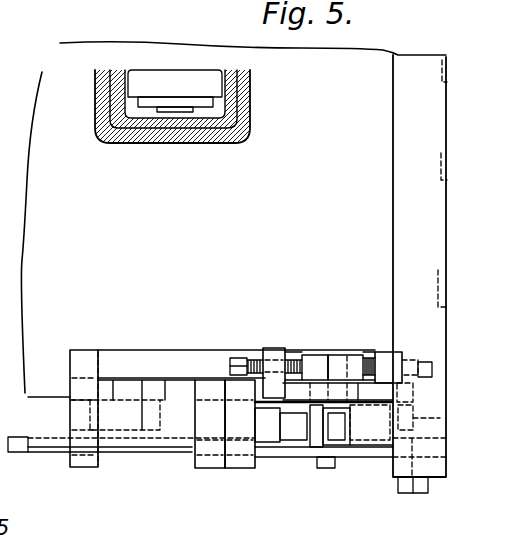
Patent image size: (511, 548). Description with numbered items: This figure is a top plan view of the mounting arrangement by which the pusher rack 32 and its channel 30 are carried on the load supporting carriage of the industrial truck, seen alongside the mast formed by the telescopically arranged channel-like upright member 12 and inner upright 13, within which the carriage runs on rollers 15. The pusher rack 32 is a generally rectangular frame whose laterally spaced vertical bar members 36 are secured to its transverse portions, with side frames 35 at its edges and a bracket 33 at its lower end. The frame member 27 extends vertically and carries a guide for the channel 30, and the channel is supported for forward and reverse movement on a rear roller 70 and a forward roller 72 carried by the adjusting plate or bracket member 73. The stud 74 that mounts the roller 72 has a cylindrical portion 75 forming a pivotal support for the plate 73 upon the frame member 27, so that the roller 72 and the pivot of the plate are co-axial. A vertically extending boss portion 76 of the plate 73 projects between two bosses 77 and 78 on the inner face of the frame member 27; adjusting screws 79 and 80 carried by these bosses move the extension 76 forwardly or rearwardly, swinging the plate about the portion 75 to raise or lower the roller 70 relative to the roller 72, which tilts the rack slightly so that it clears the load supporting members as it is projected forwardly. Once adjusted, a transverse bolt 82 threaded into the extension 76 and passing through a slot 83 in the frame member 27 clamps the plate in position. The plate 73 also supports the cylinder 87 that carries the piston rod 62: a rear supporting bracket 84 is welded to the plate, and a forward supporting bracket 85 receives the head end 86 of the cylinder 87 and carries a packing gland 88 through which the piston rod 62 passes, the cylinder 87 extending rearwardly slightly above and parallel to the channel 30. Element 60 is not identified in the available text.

The upright member 12 is at (136, 144).
The inner telescoping upright 13 is at (108, 122).
The rollers 15 is at (152, 78).
The frame member 27 is at (409, 393).
The channel 30 is at (17, 455).
The pusher rack 32 is at (449, 223).
The bracket 33 is at (374, 455).
The side frames 35 is at (430, 477).
The bar members 36 is at (449, 173).
The block 60 is at (313, 442).
The piston rod 62 is at (293, 430).
The roller 70 is at (155, 443).
The roller 72 is at (415, 418).
The adjusting plate or bracket member 73 is at (181, 354).
The stud 74 is at (368, 440).
The cylindrical portion 75 is at (370, 356).
The boss portion 76 is at (312, 355).
The boss 77 is at (272, 348).
The boss 78 is at (396, 350).
The adjusting screw 79 is at (250, 354).
The adjusting screw 80 is at (413, 353).
The transverse bolt 82 is at (328, 354).
The slot 83 is at (348, 354).
The rear supporting bracket 84 is at (83, 464).
The forward supporting bracket 85 is at (243, 470).
The head end 86 is at (210, 470).
The cylinder 87 is at (187, 456).
The packing gland 88 is at (267, 442).